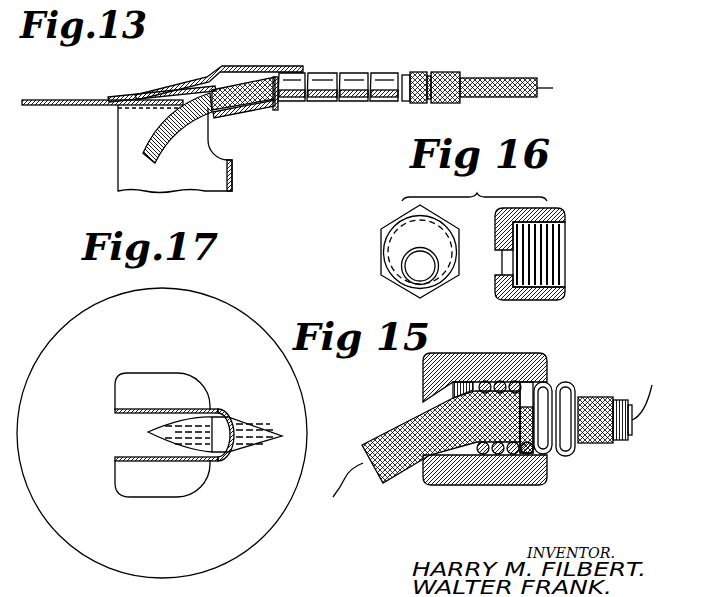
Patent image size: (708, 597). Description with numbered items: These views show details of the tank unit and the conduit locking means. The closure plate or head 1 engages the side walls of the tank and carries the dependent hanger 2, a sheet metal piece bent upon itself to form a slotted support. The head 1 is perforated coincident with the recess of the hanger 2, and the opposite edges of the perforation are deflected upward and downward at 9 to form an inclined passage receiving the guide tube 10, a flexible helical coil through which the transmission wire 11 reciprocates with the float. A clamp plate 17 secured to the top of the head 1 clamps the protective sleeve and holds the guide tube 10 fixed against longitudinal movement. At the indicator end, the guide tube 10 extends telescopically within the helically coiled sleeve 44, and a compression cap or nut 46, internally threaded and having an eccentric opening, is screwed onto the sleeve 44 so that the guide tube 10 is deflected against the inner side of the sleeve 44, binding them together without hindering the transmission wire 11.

In FIG. 13, the closure plate or head 1 is at (80, 107).
In FIG. 17, the closure plate or head 1 is at (162, 433).
In FIG. 13, the dependent hanger 2 is at (232, 168).
In FIG. 17, the dependent hanger 2 is at (217, 412).
In FIG. 13, the deflected edges of the perforation 9 is at (172, 92).
In FIG. 17, the deflected edges of the perforation 9 is at (187, 438).
In FIG. 13, the guide tube 10 is at (180, 132).
In FIG. 15, the guide tube 10 is at (617, 393).
In FIG. 13, the transmission wire 11 is at (143, 162).
In FIG. 13, the clamp plate 17 is at (242, 68).
In FIG. 15, the sleeve 44 is at (567, 387).
In FIG. 16, the compression cap or nut 46 is at (517, 302).
In FIG. 15, the compression cap or nut 46 is at (503, 355).